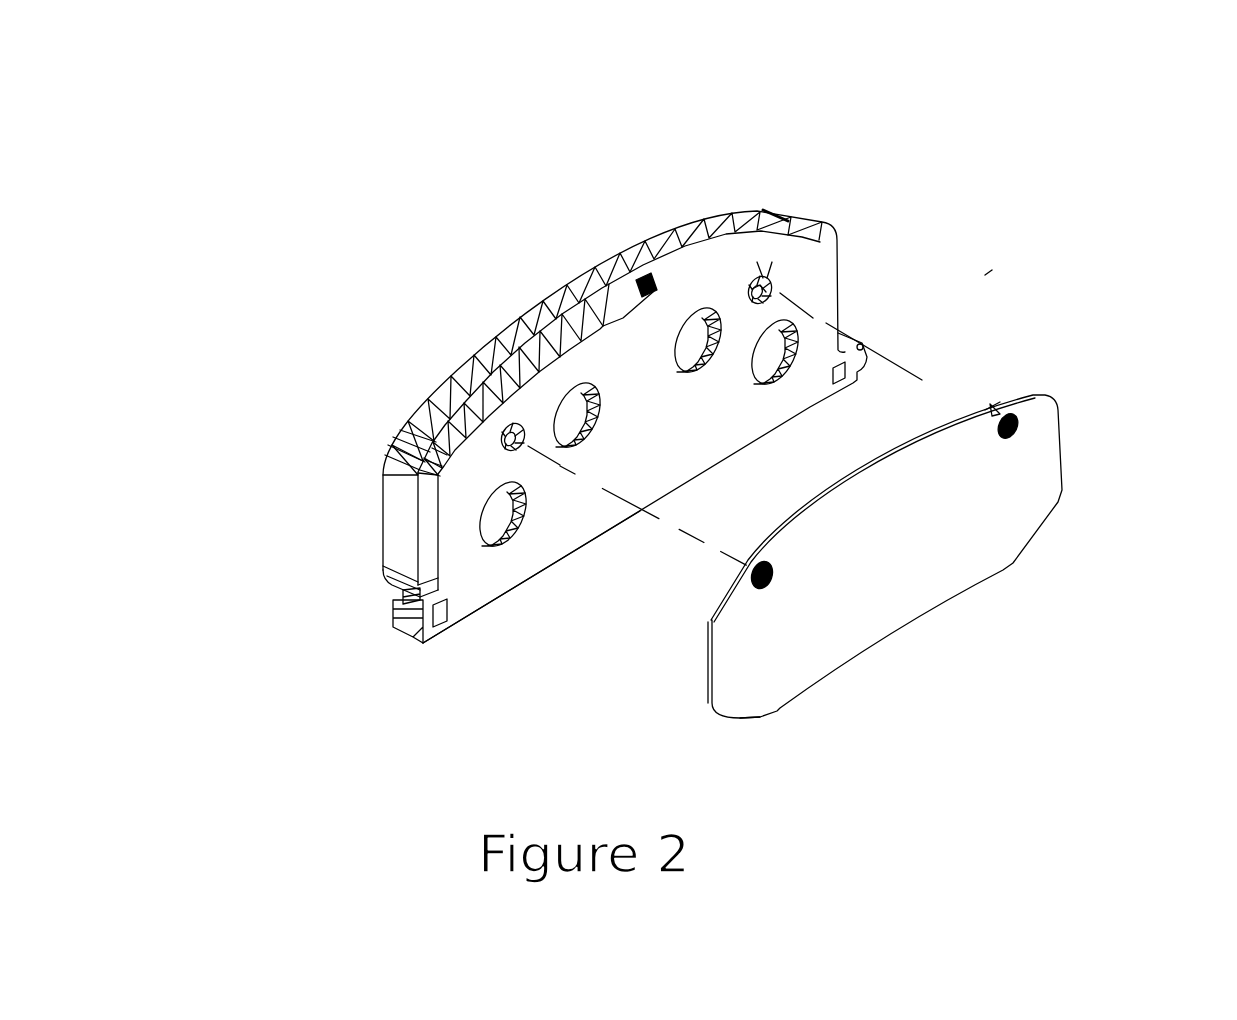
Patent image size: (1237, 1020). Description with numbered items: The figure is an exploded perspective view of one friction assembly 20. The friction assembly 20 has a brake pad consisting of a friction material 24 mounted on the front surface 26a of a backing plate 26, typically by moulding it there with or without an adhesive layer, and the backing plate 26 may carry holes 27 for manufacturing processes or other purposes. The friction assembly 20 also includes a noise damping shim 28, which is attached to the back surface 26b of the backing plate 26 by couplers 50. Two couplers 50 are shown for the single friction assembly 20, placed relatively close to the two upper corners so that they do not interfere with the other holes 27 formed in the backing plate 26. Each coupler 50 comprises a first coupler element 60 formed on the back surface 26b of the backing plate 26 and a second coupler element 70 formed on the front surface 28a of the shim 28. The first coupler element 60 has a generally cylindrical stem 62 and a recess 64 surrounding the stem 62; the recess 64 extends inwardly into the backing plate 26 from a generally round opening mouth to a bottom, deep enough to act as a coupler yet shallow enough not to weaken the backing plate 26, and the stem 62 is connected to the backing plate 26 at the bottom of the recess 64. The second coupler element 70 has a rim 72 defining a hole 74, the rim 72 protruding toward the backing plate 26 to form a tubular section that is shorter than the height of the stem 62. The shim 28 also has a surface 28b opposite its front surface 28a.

The friction assembly 20 is at (1020, 52).
The friction material 24 is at (787, 201).
The backing plate 26 is at (396, 649).
The front surface 26a is at (389, 609).
The back surface 26b is at (546, 581).
The holes 27 is at (542, 500).
The noise damping shim 28 is at (702, 672).
The front surface 28a is at (700, 703).
The face of backing plate 28b is at (746, 704).
The coupler 50 is at (999, 268).
The first coupler element 60 is at (501, 420).
The stem 62 is at (777, 293).
The recess 64 is at (779, 260).
The second coupler element 70 is at (1028, 445).
The rim 72 is at (1027, 400).
The hole 74 is at (991, 405).